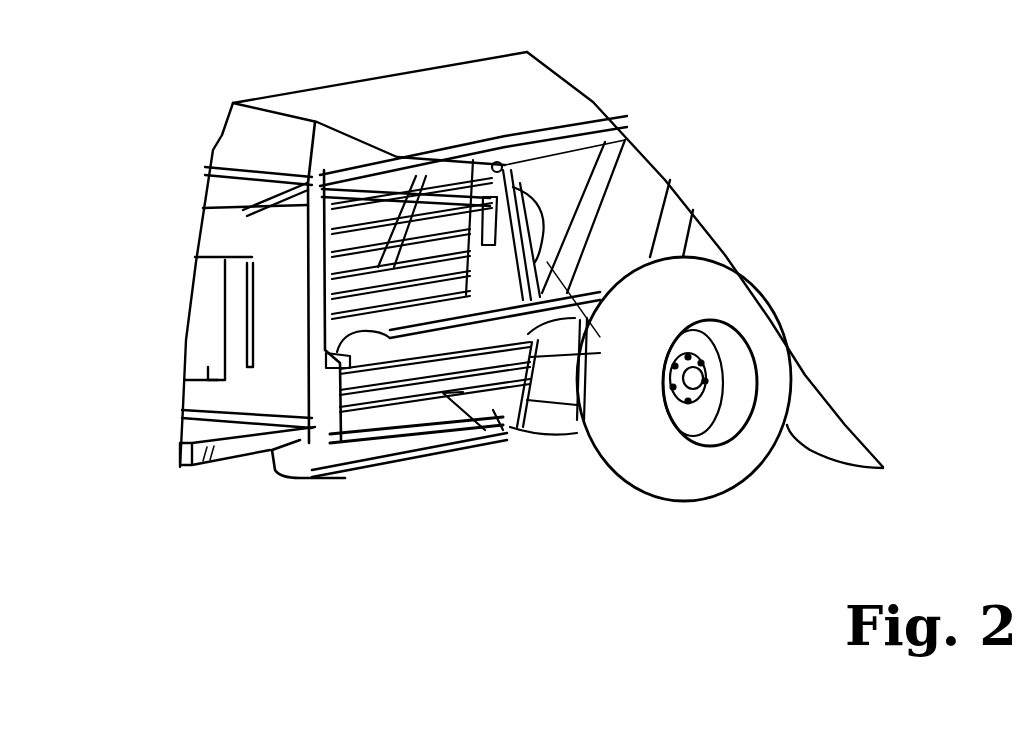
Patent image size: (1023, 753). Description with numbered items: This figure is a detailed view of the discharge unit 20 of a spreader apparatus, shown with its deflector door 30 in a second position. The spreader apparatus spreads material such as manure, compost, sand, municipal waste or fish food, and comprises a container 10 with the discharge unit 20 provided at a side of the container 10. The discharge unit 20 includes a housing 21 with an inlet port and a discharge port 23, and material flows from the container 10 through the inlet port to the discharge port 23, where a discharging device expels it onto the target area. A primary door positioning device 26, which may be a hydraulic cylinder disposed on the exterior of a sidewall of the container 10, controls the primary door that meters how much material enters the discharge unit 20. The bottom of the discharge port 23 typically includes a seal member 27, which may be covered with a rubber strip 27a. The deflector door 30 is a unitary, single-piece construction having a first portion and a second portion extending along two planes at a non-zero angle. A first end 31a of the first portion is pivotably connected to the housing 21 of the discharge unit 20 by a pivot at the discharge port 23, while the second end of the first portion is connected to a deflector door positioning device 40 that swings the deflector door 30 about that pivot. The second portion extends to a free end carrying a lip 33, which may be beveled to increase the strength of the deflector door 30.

The container 10 is at (385, 100).
The discharge unit 20 is at (292, 490).
The housing 21 is at (276, 450).
The discharge port 23 is at (511, 437).
The primary door positioning device 26 is at (592, 280).
The seal member 27 is at (352, 473).
The rubber strip 27a is at (445, 437).
The deflector door 30 is at (345, 360).
The first end of the first portion 31a is at (318, 408).
The lip 33 is at (538, 320).
The deflector door positioning device 40 is at (591, 305).